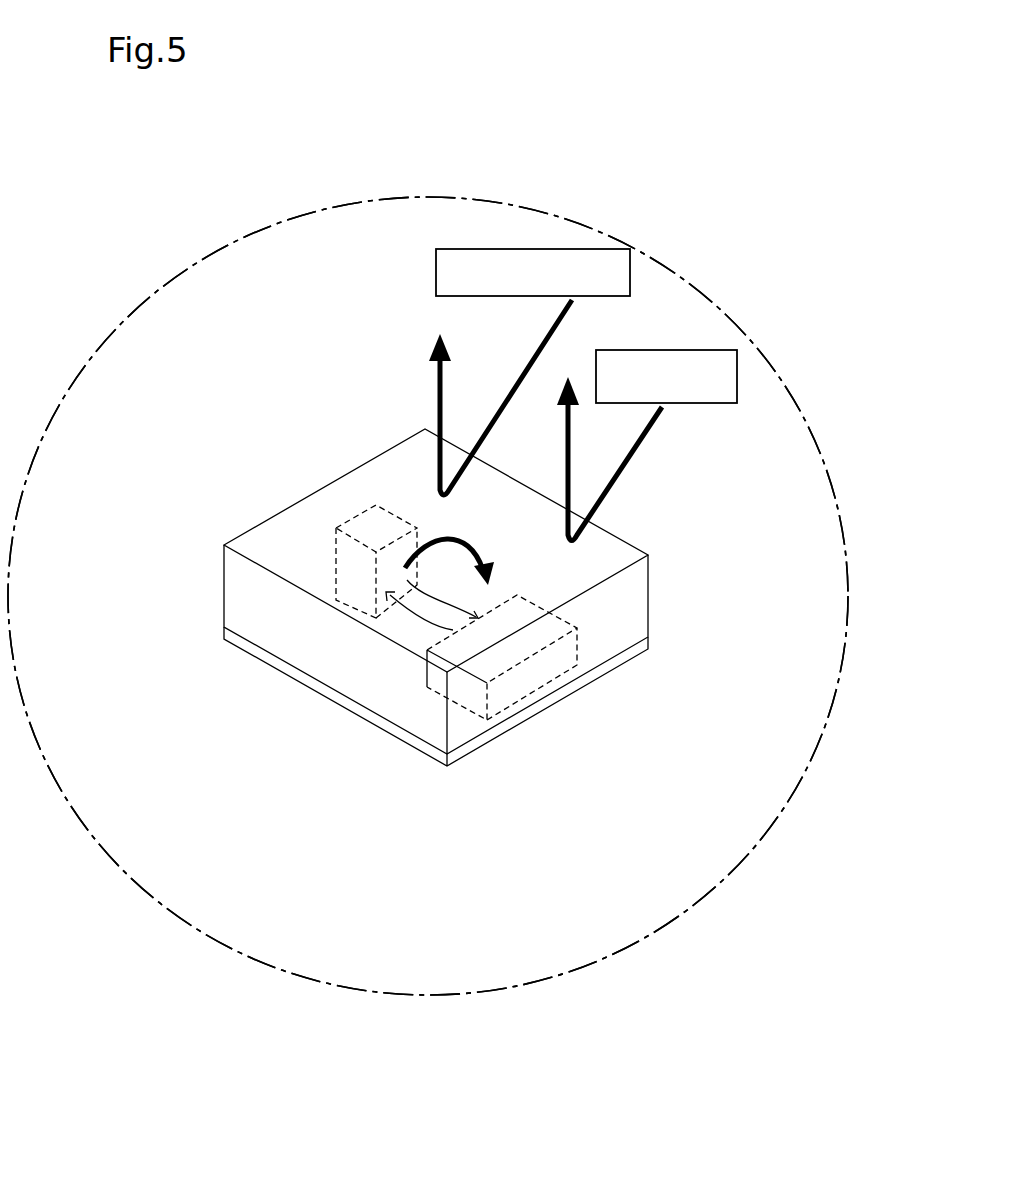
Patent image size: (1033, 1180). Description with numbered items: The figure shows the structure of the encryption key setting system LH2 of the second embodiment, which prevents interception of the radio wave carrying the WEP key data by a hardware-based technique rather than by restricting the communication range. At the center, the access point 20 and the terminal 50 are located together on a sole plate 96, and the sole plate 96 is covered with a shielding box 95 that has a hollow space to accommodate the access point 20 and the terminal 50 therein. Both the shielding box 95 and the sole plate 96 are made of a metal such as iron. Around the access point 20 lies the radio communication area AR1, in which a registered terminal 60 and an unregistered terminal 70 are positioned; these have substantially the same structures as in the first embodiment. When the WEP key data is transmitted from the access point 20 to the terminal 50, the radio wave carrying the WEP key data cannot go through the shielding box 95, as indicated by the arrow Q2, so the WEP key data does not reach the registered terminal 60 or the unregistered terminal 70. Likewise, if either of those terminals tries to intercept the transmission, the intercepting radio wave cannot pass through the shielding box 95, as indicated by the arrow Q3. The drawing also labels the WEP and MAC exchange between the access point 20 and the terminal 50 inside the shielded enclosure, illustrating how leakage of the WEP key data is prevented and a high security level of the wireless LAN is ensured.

The access point 20 is at (352, 518).
The terminal 50 is at (556, 680).
The registered terminal 60 is at (697, 404).
The unregistered terminal 70 is at (614, 297).
The shielding box 95 is at (238, 590).
The sole plate 96 is at (262, 655).
The encryption key setting system LH2 is at (586, 197).
The radio communication area AR1 is at (649, 257).
The arrow Q2 is at (478, 543).
The arrow Q3 is at (494, 441).
The WEP key data WEP is at (442, 599).
The MAC address transmission MAC is at (419, 617).